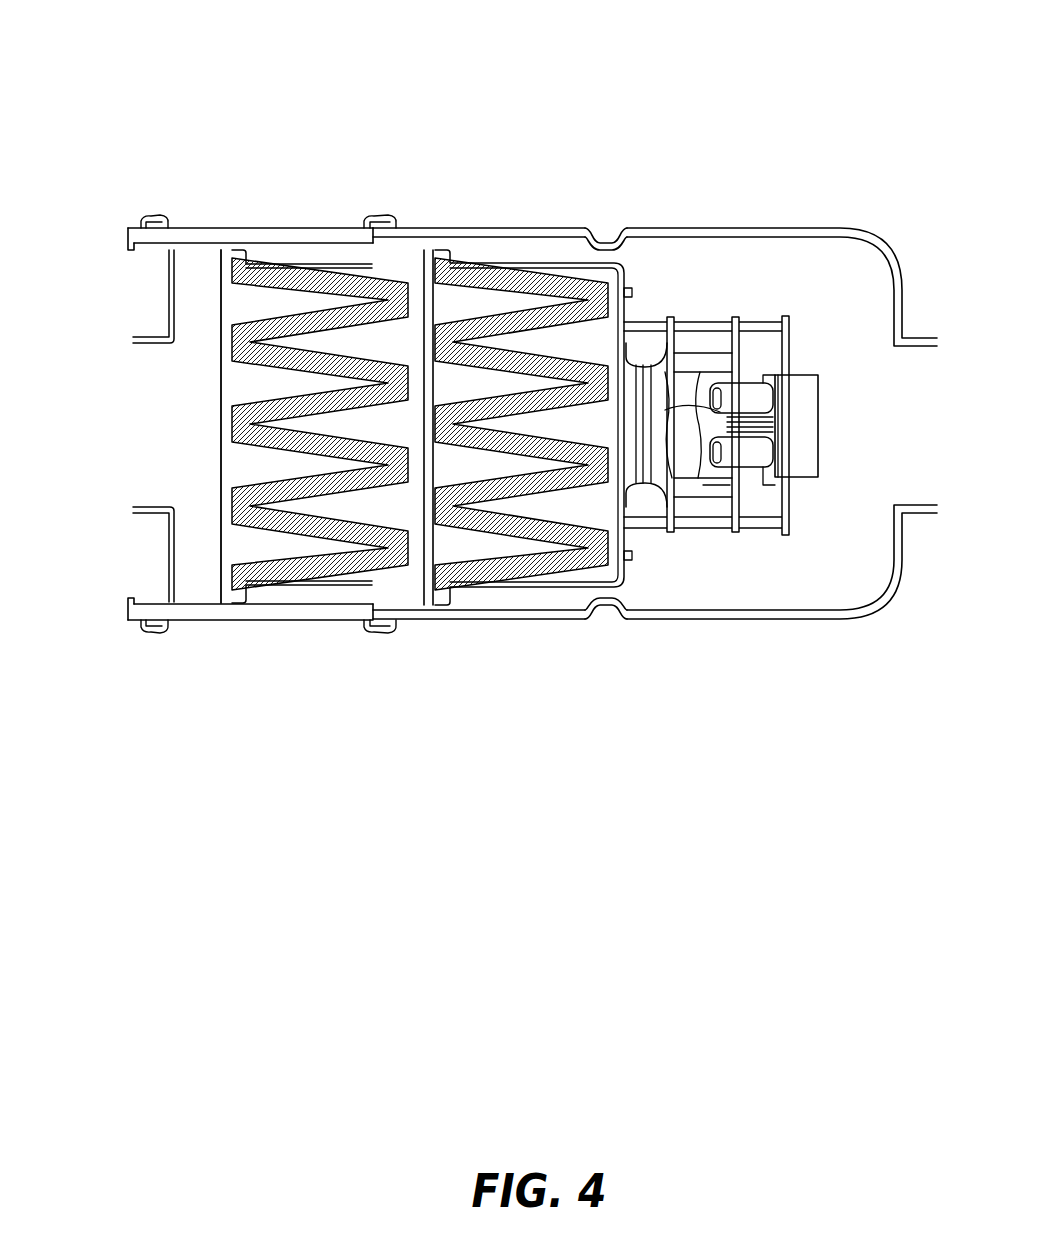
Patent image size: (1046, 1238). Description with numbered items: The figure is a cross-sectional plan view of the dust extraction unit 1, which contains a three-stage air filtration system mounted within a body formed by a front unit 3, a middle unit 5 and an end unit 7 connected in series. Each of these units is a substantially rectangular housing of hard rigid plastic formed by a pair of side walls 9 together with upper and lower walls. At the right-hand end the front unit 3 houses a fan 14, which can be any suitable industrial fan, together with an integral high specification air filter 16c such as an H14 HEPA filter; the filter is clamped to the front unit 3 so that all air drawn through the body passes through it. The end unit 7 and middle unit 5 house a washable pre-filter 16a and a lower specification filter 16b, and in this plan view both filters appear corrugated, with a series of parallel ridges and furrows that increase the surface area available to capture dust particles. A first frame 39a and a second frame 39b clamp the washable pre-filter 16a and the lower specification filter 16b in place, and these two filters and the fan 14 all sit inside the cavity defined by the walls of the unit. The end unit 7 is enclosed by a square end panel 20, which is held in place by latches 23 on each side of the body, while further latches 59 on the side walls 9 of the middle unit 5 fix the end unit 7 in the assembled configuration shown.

The dust extraction unit 1 is at (176, 70).
The front unit 3 is at (761, 354).
The middle unit 5 is at (479, 354).
The end unit 7 is at (250, 354).
The side walls 9 is at (588, 369).
The fan 14 is at (722, 512).
The washable pre-filter 16a is at (359, 312).
The lower specification filter 16b is at (558, 312).
The high specification air filter 16c is at (705, 459).
The end panel 20 is at (96, 383).
The latches 23 is at (141, 417).
The first frame 39a is at (279, 398).
The second frame 39b is at (510, 414).
The latches 59 is at (390, 403).